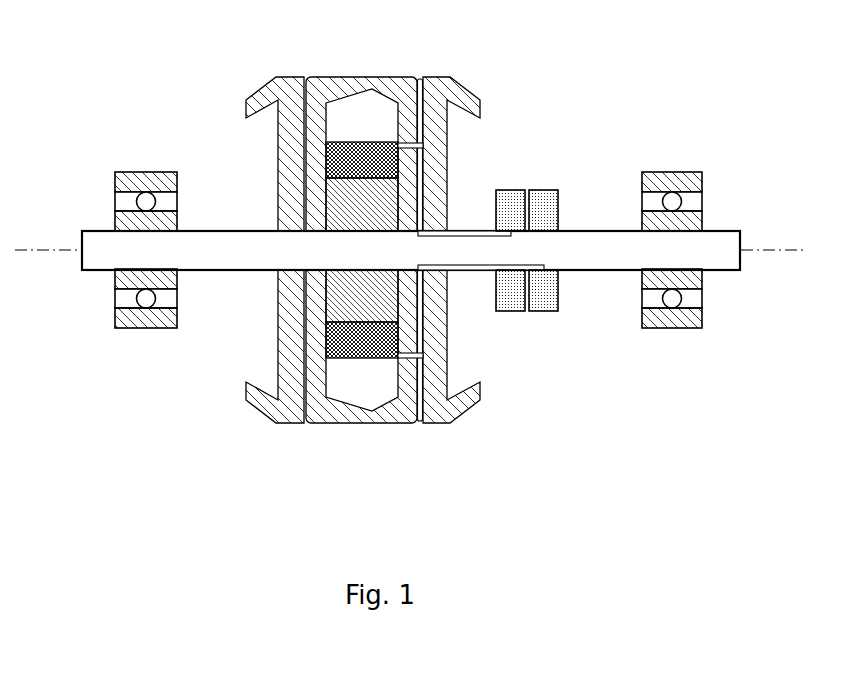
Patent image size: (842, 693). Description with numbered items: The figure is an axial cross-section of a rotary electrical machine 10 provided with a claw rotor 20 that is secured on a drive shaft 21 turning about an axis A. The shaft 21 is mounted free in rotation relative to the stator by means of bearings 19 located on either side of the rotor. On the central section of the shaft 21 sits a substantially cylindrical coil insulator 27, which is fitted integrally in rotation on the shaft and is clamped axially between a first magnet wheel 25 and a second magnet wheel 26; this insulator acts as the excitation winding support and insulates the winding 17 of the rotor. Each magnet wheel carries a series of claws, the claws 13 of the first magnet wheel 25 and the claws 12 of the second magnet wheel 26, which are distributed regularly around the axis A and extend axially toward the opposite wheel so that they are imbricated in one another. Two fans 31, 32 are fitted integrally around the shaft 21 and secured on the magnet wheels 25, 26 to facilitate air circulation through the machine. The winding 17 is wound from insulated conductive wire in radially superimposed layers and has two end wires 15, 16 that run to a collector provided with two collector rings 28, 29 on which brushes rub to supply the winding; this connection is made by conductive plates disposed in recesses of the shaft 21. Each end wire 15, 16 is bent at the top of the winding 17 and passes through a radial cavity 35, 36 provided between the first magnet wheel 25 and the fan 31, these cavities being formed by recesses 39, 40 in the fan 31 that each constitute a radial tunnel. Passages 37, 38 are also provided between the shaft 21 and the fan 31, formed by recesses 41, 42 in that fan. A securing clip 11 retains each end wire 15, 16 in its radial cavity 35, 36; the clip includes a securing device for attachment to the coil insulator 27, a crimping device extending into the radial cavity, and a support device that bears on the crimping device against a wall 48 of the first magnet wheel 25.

The electrical machine 10 is at (82, 417).
The securing clip 11 is at (445, 425).
The claws 12 is at (352, 425).
The claws 13 is at (383, 422).
The end wire 15 is at (402, 136).
The end wire 16 is at (422, 428).
The winding 17 is at (343, 362).
The bearings 19 is at (123, 334).
The claw rotor 20 is at (347, 57).
The drive shaft 21 is at (95, 266).
The first magnet wheel 25 is at (385, 427).
The second magnet wheel 26 is at (278, 158).
The coil insulator 27 is at (290, 313).
The collector ring 28 is at (500, 189).
The collector ring 29 is at (557, 306).
The fan 31 is at (482, 402).
The fan 32 is at (260, 106).
The radial cavity 35 is at (447, 132).
The radial cavity 36 is at (455, 345).
The passage 37 is at (447, 183).
The passage 38 is at (448, 286).
The recess 39 is at (467, 154).
The recess 40 is at (472, 346).
The recess 41 is at (451, 154).
The recess 42 is at (451, 346).
The wall 48 is at (420, 92).
The axis A is at (410, 238).